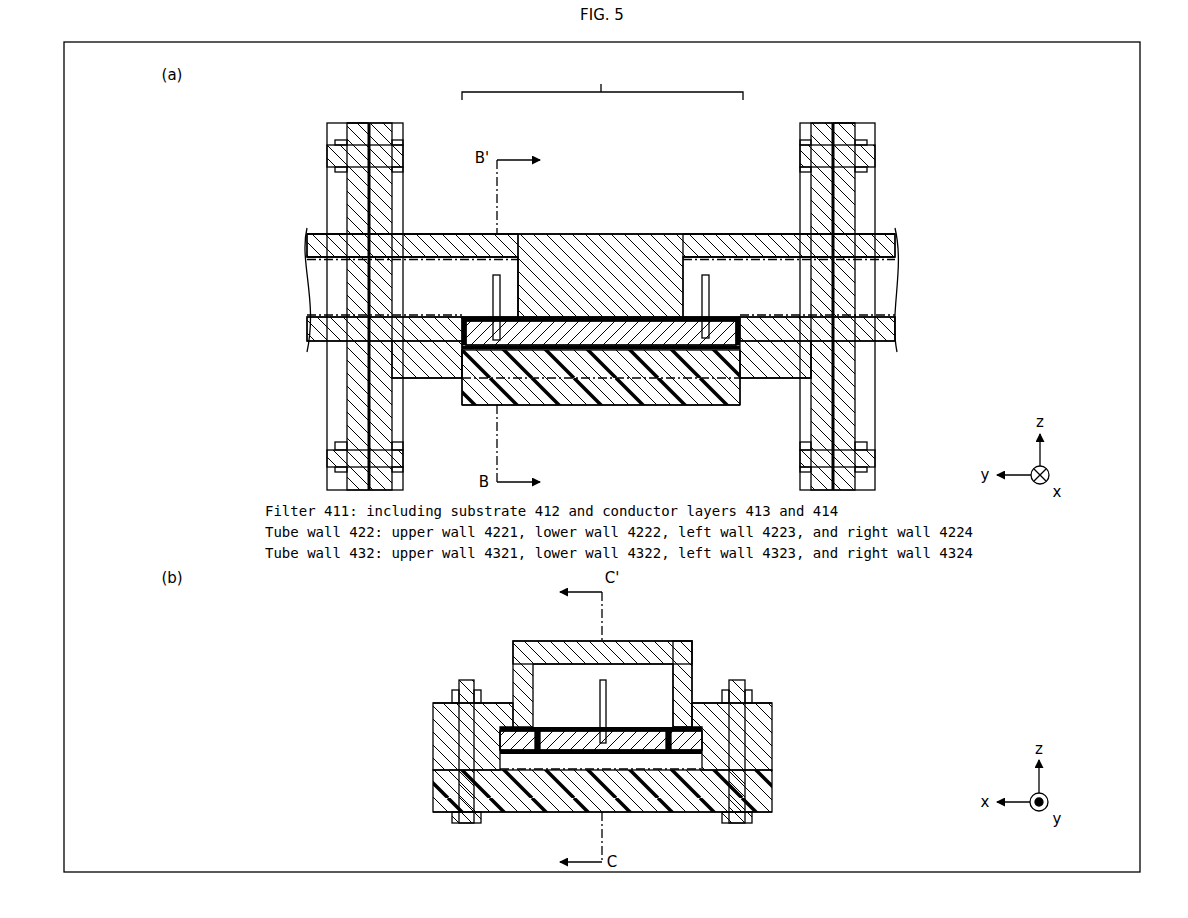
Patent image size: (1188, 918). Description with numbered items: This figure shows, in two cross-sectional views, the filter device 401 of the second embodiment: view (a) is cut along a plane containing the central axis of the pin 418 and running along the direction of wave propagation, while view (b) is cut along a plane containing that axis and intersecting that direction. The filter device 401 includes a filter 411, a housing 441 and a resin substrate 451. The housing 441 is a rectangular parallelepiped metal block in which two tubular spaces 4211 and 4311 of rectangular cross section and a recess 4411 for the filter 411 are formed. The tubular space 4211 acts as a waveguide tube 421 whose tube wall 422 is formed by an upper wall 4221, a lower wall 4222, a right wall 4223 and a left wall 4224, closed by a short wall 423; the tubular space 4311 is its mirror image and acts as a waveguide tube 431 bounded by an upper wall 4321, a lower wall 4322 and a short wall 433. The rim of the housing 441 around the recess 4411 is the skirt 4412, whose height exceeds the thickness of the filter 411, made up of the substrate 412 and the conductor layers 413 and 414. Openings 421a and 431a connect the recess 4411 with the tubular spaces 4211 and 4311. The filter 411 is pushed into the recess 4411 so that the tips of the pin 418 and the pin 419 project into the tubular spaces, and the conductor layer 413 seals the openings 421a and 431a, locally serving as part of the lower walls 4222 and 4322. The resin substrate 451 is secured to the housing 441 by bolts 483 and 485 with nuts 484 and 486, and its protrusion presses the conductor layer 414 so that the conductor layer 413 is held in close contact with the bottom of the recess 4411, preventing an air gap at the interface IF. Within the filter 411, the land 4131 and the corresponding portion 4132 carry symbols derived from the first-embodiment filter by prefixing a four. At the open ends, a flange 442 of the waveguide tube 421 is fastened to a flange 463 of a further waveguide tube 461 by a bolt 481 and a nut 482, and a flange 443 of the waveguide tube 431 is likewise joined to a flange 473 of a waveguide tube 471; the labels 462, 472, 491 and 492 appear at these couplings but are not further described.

The filter device 401 is at (902, 95).
The filter 411 is at (604, 318).
The substrate 412 is at (628, 330).
The conductor layer 413 is at (612, 318).
The conductor layer 414 is at (615, 350).
The pin 418 is at (493, 285).
The pin 419 is at (709, 285).
The waveguide tube 421 is at (472, 145).
The tube wall 422 is at (455, 232).
The short wall 423 is at (522, 258).
The waveguide tube 431 is at (729, 145).
The short wall 433 is at (680, 258).
The housing 441 is at (602, 83).
The flange 442 is at (372, 123).
The flange 443 is at (822, 123).
The resin substrate 451 is at (586, 401).
The waveguide tube 461 is at (318, 188).
The flange plate 462 is at (340, 232).
The flange 463 is at (357, 123).
The waveguide tube 471 is at (888, 212).
The flange plate 472 is at (871, 232).
The flange 473 is at (846, 123).
The bolt 481 is at (403, 141).
The nut 482 is at (335, 141).
The bolt 483 is at (455, 822).
The nut 484 is at (458, 688).
The bolt 485 is at (750, 822).
The nut 486 is at (746, 688).
The nut 491 is at (800, 142).
The nut 492 is at (867, 142).
The land 4131 is at (470, 308).
The end portion of conductor layer 4132 is at (733, 308).
The tubular space 4211 is at (395, 258).
The tubular space 4311 is at (805, 258).
The upper wall 4221 is at (413, 254).
The lower wall 4222 is at (411, 345).
The right wall 4223 is at (673, 690).
The left wall 4224 is at (533, 690).
The upper wall 4321 is at (763, 254).
The lower wall 4322 is at (761, 345).
The recess 4411 is at (650, 405).
The skirt 4412 is at (420, 380).
The opening 421a is at (464, 402).
The opening 431a is at (736, 402).
The interface IF is at (590, 318).